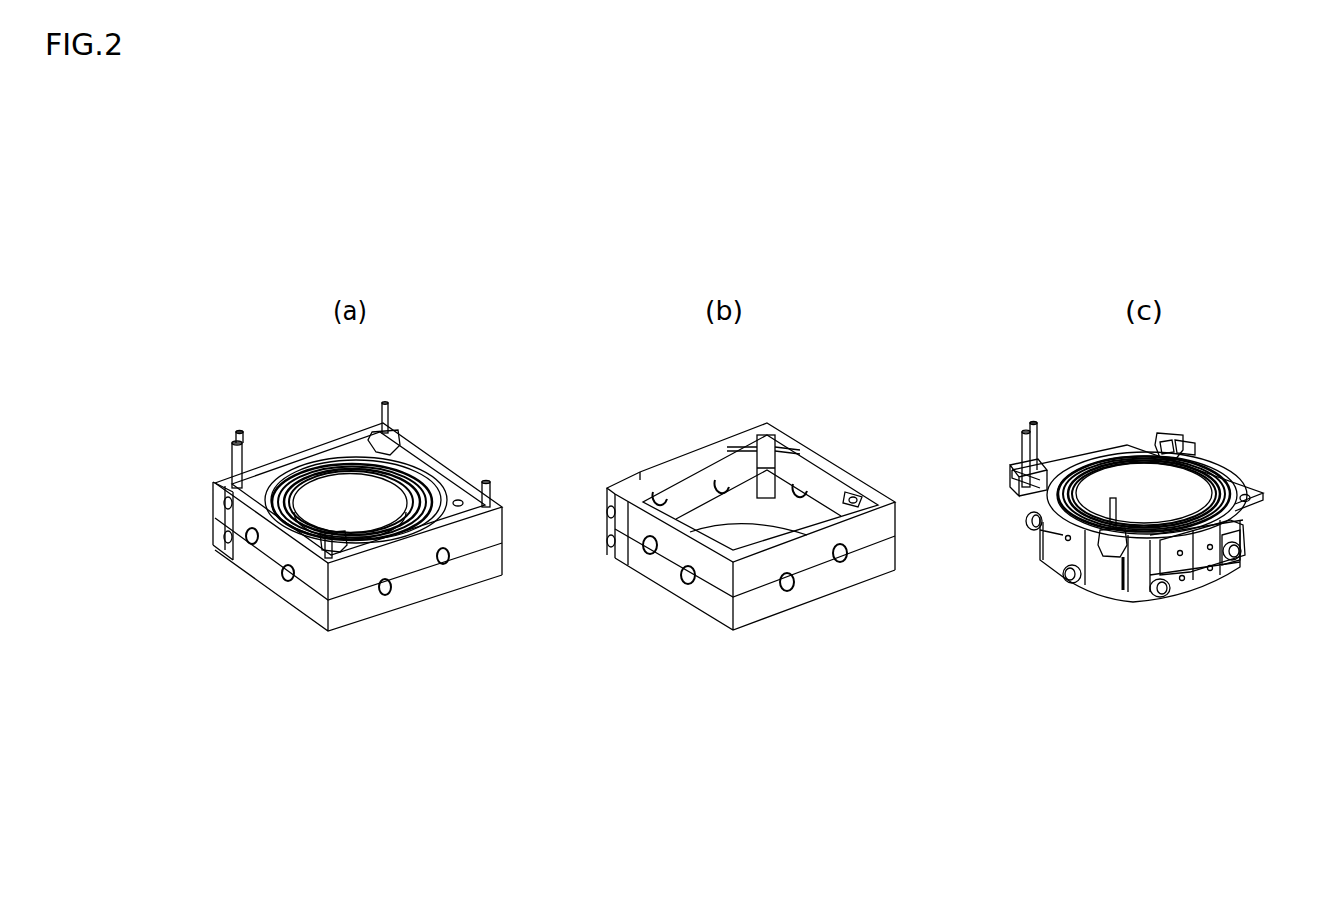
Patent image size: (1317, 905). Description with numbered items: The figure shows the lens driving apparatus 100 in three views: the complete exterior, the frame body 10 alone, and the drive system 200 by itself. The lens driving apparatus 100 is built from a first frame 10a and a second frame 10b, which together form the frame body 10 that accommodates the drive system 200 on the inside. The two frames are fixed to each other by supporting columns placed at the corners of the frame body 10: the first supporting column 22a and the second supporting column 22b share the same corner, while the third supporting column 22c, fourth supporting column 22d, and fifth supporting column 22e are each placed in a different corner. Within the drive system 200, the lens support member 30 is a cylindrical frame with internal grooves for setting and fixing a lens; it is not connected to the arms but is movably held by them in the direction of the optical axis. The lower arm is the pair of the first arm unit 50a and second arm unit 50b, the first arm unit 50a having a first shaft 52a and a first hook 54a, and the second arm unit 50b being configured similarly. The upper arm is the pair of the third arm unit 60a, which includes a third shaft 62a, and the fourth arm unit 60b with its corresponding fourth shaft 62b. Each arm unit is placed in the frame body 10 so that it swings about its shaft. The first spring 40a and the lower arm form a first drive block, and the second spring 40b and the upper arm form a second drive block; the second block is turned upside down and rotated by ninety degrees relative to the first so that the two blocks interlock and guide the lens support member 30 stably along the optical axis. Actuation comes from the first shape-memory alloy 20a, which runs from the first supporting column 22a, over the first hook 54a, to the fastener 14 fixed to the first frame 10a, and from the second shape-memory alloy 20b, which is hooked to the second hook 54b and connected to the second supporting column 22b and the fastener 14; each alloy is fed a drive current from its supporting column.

The lens driving apparatus 100 is at (430, 706).
The drive system 200 is at (430, 461).
The frame body 10 is at (560, 517).
The first frame 10a is at (492, 527).
The second frame 10b is at (492, 558).
The fastener 14 is at (866, 492).
The first shape-memory alloy 20a is at (1020, 492).
The second shape-memory alloy 20b is at (1077, 458).
The first supporting column 22a is at (233, 458).
The second supporting column 22b is at (243, 436).
The third supporting column 22c is at (340, 553).
The fourth supporting column 22d is at (490, 489).
The fifth supporting column 22e is at (388, 407).
The lens support member 30 is at (1200, 458).
The first spring 40a is at (1140, 447).
The second spring 40b is at (1130, 603).
The first arm unit 50a is at (1201, 580).
The second arm unit 50b is at (1180, 442).
The first shaft 52a is at (1180, 600).
The first hook 54a is at (1113, 527).
The second hook 54b is at (1167, 442).
The third arm unit 60a is at (1235, 562).
The fourth arm unit 60b is at (1060, 545).
The third shaft 62a is at (1240, 550).
The fourth shaft 62b is at (1030, 525).